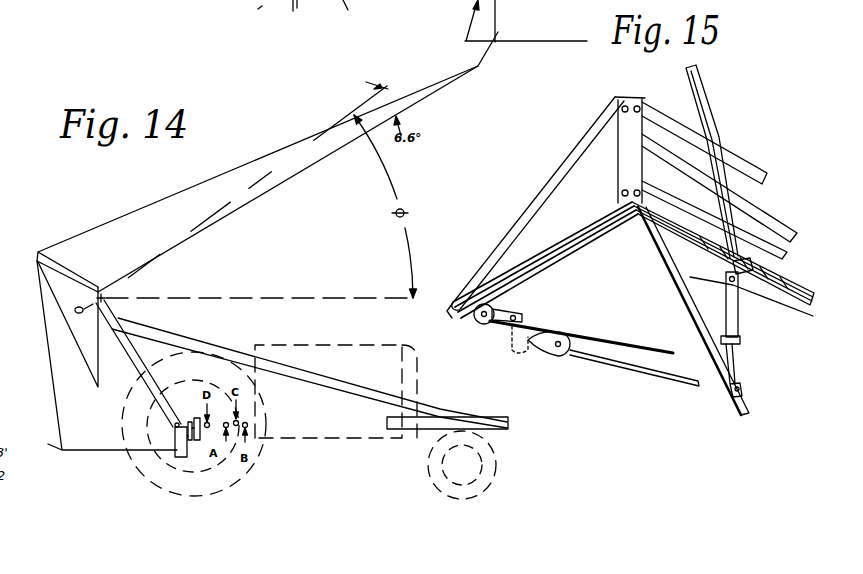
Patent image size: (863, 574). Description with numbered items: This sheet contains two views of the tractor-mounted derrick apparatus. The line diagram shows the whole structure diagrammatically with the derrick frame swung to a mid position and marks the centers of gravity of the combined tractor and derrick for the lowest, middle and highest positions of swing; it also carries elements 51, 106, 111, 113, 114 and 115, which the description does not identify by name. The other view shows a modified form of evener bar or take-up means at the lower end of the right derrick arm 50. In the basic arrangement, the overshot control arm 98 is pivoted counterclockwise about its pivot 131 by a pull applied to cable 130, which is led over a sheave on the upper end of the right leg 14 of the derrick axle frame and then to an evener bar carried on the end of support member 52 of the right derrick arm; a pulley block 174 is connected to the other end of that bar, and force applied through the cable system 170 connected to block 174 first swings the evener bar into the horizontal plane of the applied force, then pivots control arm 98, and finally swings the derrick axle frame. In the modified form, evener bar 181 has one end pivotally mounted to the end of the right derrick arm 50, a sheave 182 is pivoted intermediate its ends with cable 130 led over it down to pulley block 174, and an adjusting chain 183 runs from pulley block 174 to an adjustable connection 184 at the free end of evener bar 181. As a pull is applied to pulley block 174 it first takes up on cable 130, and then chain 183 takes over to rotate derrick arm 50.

In FIG. 15, the right leg 14 is at (679, 298).
In FIG. 15, the right derrick arm 50 is at (575, 146).
In FIG. 14, the boom lower edge 51 is at (268, 188).
In FIG. 15, the support member 52 is at (596, 226).
In FIG. 15, the overshot control arm 98 is at (708, 84).
In FIG. 14, the frame member 106 is at (498, 21).
In FIG. 14, the frame member 111 is at (346, 14).
In FIG. 14, the frame member 113 is at (311, 5).
In FIG. 14, the frame member 114 is at (249, 10).
In FIG. 14, the frame member 115 is at (288, 14).
In FIG. 15, the cable 130 is at (594, 247).
In FIG. 15, the pivot 131 is at (757, 303).
In FIG. 15, the cable system 170 is at (679, 381).
In FIG. 15, the pulley block 174 is at (562, 357).
In FIG. 15, the evener bar 181 is at (469, 318).
In FIG. 15, the sheave 182 is at (483, 327).
In FIG. 15, the adjusting chain 183 is at (522, 357).
In FIG. 15, the adjustable connection 184 is at (525, 315).